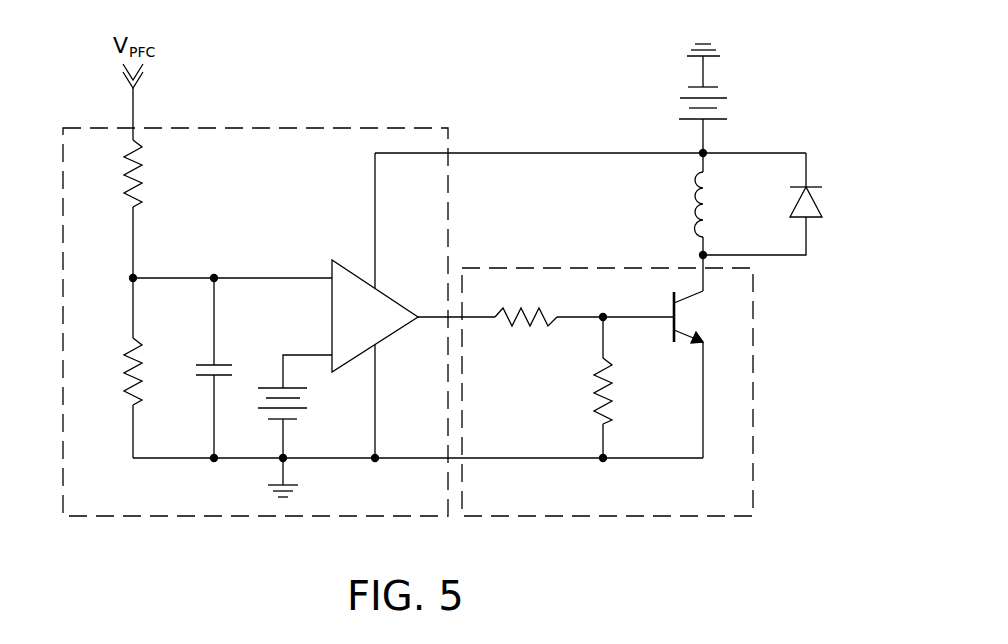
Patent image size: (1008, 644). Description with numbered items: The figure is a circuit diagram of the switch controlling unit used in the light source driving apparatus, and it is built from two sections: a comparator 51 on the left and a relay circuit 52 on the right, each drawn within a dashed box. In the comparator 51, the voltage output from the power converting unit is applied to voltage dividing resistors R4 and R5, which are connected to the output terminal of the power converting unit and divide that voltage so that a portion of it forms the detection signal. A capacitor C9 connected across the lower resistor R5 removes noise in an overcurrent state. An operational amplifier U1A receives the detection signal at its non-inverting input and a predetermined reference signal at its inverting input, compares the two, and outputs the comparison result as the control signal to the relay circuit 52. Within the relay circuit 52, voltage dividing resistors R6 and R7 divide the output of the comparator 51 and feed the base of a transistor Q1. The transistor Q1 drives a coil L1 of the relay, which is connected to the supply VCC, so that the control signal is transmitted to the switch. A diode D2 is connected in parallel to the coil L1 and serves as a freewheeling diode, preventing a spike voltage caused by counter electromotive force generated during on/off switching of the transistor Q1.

The comparator 51 is at (383, 293).
The relay circuit 52 is at (609, 423).
The voltage dividing resistor R4 is at (114, 173).
The voltage dividing resistor R5 is at (114, 371).
The capacitor C9 is at (196, 368).
The operational amplifier U1A is at (383, 320).
The voltage dividing resistor R6 is at (526, 334).
The voltage dividing resistor R7 is at (623, 387).
The transistor Q1 is at (707, 374).
The coil L1 is at (718, 204).
The diode D2 is at (784, 204).
The power supply VCC is at (729, 92).